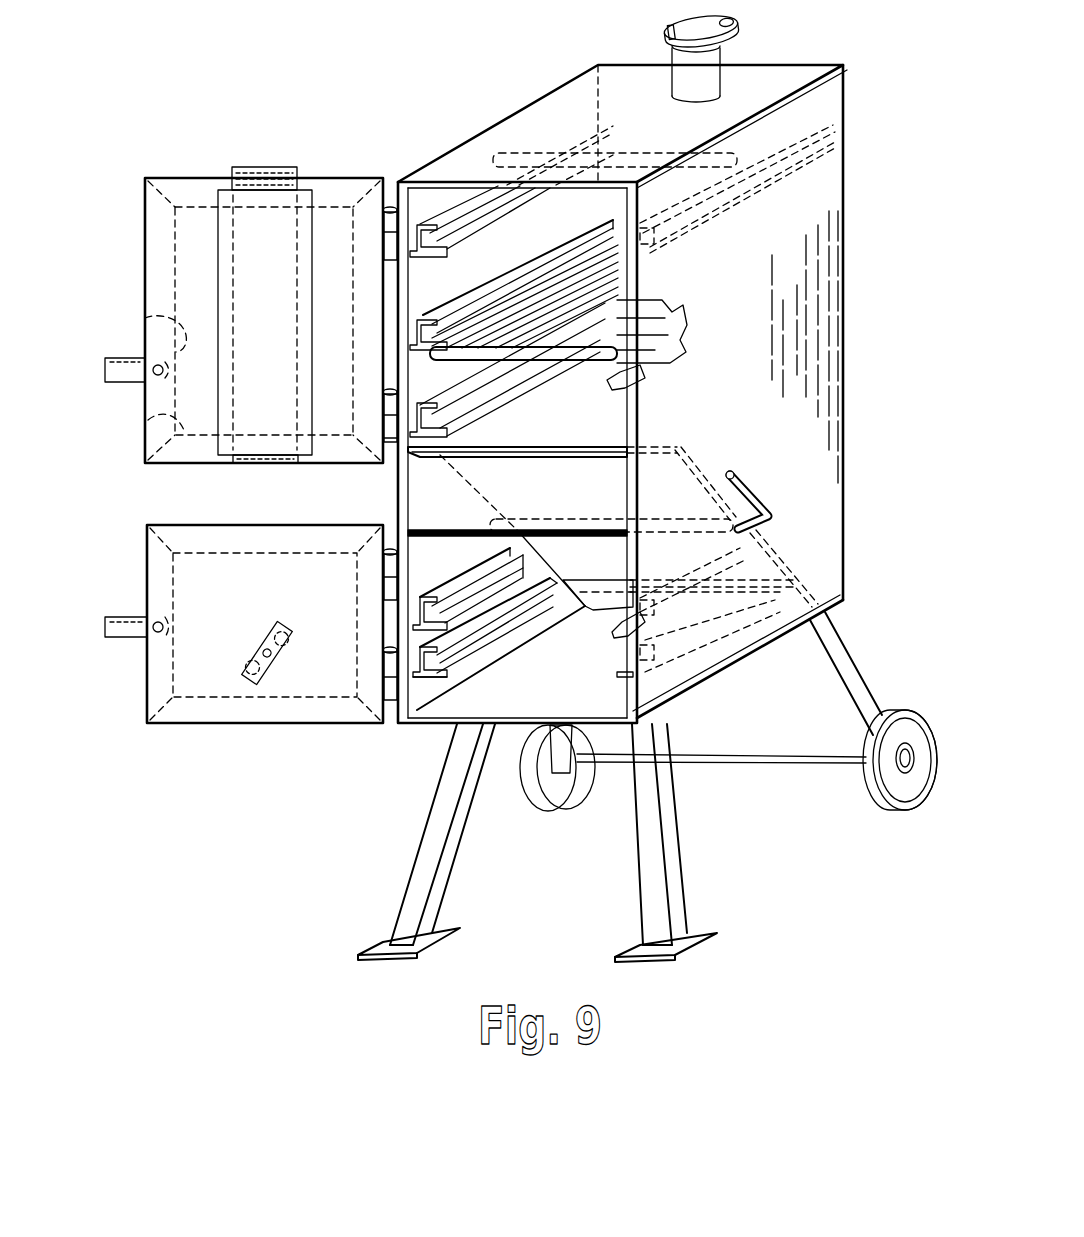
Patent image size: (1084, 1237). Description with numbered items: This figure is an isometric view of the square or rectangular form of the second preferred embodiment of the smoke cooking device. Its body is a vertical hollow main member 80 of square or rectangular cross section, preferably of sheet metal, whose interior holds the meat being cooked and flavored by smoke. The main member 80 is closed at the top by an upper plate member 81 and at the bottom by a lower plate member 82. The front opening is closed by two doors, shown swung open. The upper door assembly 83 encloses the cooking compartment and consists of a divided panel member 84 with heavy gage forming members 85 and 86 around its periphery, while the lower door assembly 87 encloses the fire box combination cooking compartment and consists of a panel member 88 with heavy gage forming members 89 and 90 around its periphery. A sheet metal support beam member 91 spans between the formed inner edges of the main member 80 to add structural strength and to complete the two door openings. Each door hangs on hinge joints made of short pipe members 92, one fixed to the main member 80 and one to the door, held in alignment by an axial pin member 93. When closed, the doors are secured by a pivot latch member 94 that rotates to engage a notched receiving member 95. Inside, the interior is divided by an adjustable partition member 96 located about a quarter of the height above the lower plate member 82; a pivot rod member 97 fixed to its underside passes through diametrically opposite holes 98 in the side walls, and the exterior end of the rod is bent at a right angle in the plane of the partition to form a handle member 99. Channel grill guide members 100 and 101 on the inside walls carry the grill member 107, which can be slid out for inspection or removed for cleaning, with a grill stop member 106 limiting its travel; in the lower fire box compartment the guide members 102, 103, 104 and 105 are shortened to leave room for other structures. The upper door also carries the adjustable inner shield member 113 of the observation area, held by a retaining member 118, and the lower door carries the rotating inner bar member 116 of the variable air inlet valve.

The main member 80 is at (846, 72).
The plate member 81 is at (622, 109).
The plate member 82 is at (681, 700).
The upper door assembly 83 is at (145, 283).
The divided panel member 84 is at (187, 230).
The heavy gage forming member 85 is at (146, 319).
The heavy gage forming member 86 is at (150, 421).
The lower door assembly 87 is at (147, 578).
The panel member 88 is at (211, 615).
The heavy gage forming member 89 is at (190, 693).
The heavy gage forming member 90 is at (350, 570).
The sheet metal support beam member 91 is at (430, 499).
The short pipe member 92 is at (395, 702).
The axial pin member 93 is at (391, 205).
The pivot latch member 94 is at (122, 634).
The notched receiving member 95 is at (618, 632).
The adjustable partition member 96 is at (576, 447).
The pivot rod member 97 is at (582, 512).
The holes 98 is at (722, 512).
The handle member 99 is at (757, 492).
The channel grill guide member 100 is at (516, 215).
The channel grill guide member 101 is at (770, 200).
The guide member 102 is at (478, 570).
The guide member 103 is at (490, 640).
The guide member 104 is at (782, 541).
The guide member 105 is at (755, 620).
The grill stop member 106 is at (450, 681).
The grill member 107 is at (592, 366).
The adjustable inner shield member 113 is at (265, 168).
The rotating inner bar member 116 is at (290, 651).
The retaining member 118 is at (213, 438).